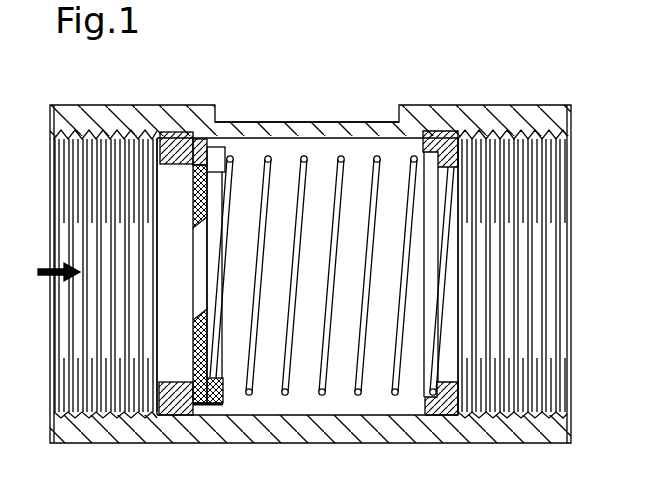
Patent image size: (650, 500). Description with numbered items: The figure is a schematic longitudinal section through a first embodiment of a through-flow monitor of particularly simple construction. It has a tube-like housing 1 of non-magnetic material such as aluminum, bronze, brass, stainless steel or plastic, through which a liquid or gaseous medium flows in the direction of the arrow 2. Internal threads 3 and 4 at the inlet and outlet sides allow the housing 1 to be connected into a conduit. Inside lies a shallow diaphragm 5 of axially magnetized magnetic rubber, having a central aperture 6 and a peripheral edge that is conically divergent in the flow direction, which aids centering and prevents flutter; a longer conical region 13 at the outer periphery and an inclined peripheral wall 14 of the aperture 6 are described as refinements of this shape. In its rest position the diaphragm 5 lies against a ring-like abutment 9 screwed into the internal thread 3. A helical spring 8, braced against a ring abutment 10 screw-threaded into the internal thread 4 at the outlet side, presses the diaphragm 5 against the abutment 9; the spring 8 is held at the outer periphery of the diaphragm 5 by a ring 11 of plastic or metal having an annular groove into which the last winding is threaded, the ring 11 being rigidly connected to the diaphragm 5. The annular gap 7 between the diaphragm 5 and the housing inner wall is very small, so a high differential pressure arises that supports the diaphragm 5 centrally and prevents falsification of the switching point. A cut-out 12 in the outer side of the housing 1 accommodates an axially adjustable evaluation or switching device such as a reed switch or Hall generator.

The housing 1 is at (536, 107).
The arrow 2 is at (48, 273).
The internal thread 3 is at (73, 134).
The internal thread 4 is at (556, 144).
The shallow diaphragm 5 is at (191, 199).
The central aperture 6 is at (200, 289).
The annular gap 7 is at (200, 137).
The helical spring 8 is at (342, 156).
The ring-like abutment 9 is at (168, 158).
The ring abutment 10 is at (448, 136).
The ring 11 is at (224, 389).
The cut-out 12 is at (278, 120).
The conical region 13 is at (200, 408).
The peripheral wall 14 is at (205, 322).